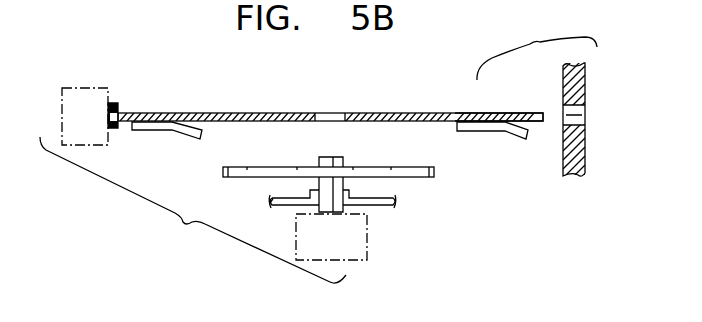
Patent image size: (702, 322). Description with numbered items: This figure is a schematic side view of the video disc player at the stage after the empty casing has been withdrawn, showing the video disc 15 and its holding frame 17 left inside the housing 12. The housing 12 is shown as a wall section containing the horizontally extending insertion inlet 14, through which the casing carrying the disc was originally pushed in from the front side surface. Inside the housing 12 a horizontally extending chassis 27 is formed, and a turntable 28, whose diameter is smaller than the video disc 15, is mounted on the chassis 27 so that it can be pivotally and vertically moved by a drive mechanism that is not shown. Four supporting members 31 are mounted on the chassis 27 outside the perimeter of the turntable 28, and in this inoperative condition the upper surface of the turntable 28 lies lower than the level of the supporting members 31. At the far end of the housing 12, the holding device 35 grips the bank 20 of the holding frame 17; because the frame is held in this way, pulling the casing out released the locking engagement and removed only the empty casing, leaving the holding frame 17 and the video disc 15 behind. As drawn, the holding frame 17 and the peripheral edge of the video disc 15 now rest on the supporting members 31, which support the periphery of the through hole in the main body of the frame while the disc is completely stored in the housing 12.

The housing 12 is at (584, 149).
The insertion inlet 14 is at (574, 114).
The video disc 15 is at (256, 113).
The holding frame 17 is at (500, 113).
The bank 20 is at (117, 108).
The chassis 27 is at (372, 205).
The turntable 28 is at (417, 178).
The supporting member 31 is at (157, 131).
The holding device 35 is at (92, 87).